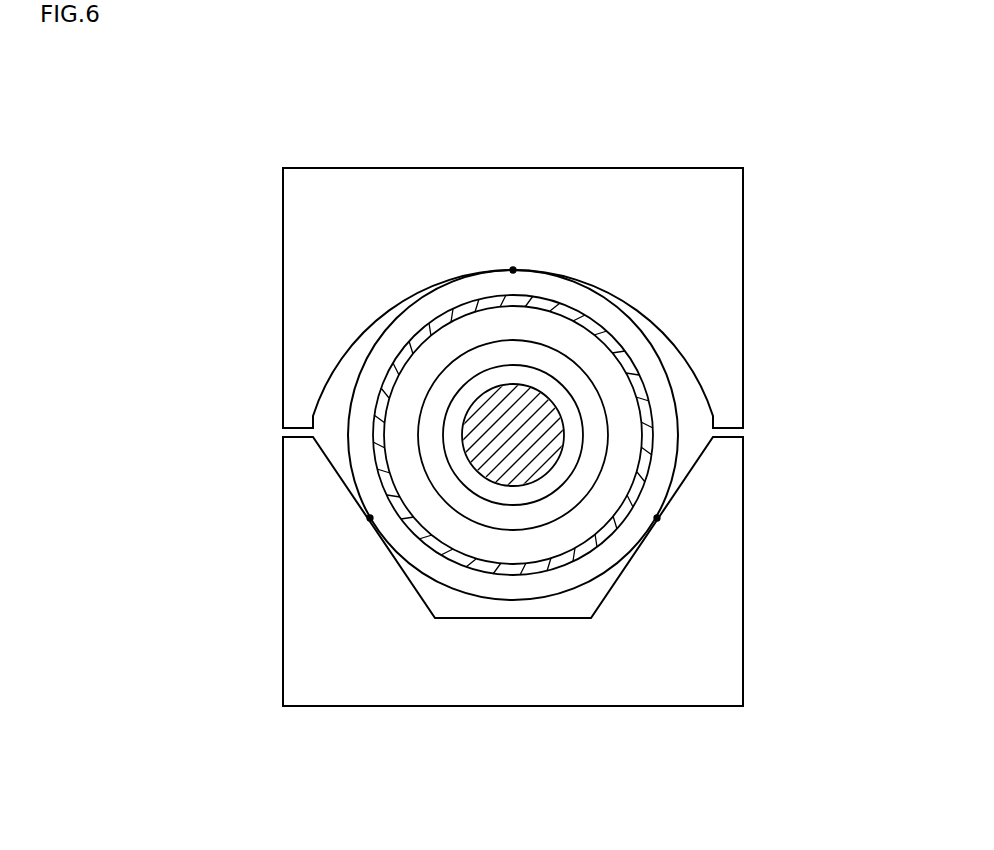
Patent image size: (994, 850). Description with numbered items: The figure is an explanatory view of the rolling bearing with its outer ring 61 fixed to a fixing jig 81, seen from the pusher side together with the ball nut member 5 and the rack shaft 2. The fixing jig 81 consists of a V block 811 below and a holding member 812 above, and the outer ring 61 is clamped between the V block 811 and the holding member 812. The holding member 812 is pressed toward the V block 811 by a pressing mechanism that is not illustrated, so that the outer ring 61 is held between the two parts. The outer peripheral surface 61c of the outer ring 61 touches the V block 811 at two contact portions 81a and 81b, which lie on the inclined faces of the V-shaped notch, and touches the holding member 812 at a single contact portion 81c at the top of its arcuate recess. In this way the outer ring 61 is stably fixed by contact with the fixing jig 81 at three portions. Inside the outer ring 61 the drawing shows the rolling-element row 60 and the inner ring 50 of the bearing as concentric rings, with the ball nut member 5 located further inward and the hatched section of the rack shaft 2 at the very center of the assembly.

The fixing jig 81 is at (560, 386).
The holding member 812 is at (743, 215).
The V block 811 is at (743, 481).
The contact portion 81a is at (370, 518).
The contact portion 81b is at (657, 518).
The contact portion 81c is at (513, 270).
The outer peripheral surface 61c is at (383, 331).
The outer ring 61 is at (435, 419).
The bearing rolling elements 60 is at (380, 417).
The inner ring 50 is at (613, 373).
The ball nut member 5 is at (598, 425).
The rack shaft 2 is at (482, 447).